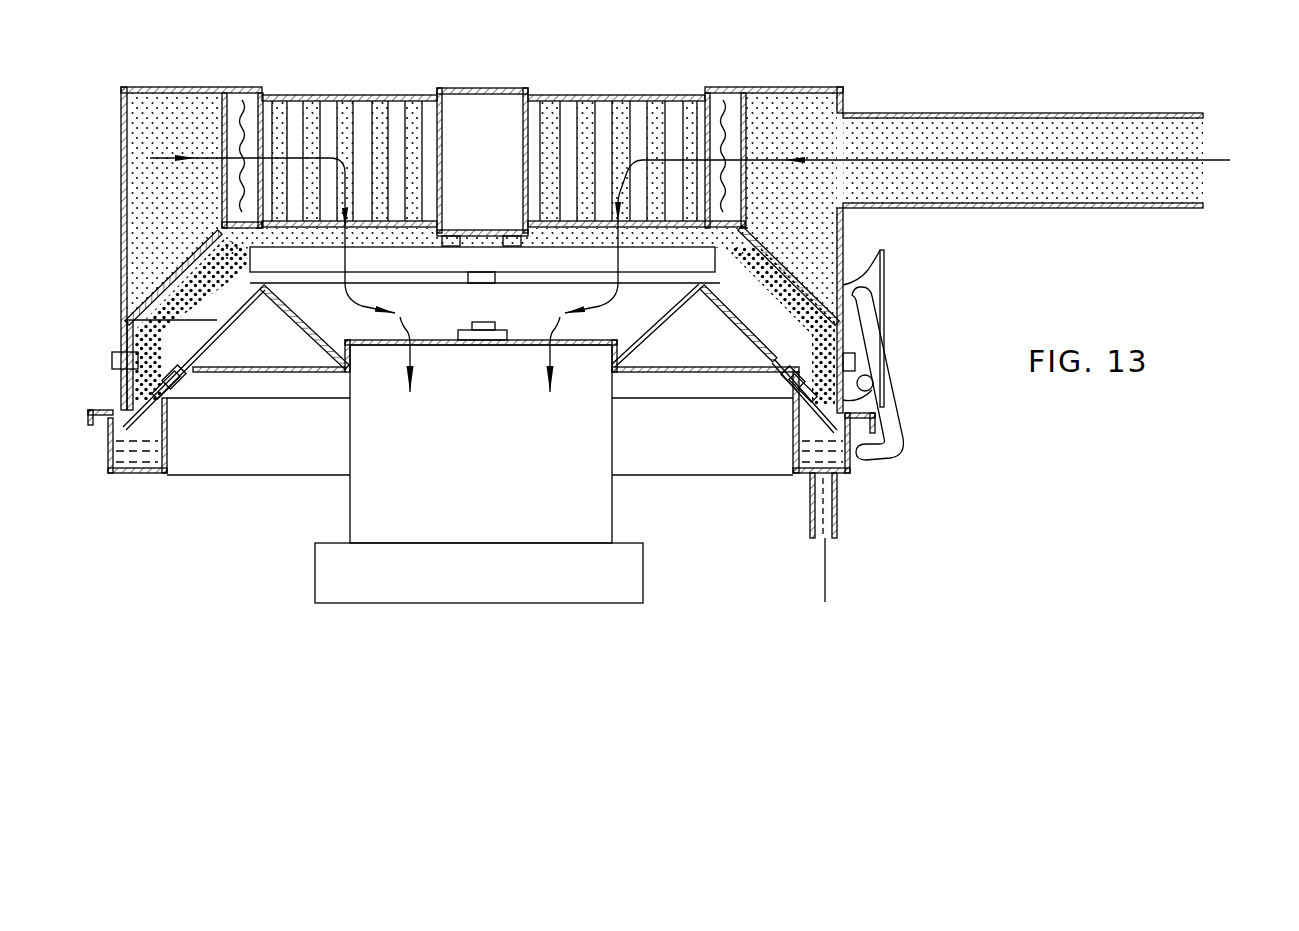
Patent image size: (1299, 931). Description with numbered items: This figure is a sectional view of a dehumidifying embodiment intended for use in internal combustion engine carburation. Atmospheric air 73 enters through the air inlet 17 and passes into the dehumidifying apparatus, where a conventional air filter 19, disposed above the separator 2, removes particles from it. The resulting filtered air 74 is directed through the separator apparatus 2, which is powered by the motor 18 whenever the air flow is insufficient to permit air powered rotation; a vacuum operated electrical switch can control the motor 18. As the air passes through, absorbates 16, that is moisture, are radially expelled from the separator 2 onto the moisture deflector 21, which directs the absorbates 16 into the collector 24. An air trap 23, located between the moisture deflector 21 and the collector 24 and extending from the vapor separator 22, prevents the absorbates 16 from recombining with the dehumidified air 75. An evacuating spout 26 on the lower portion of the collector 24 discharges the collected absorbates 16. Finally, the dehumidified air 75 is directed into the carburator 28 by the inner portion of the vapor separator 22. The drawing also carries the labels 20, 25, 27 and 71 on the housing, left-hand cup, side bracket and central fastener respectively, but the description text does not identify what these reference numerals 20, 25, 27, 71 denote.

The separator 2 is at (283, 284).
The absorbates 16 is at (206, 259).
The air inlet 17 is at (1208, 162).
The motor 18 is at (466, 120).
The air filter 19 is at (300, 128).
The housing 20 is at (188, 76).
The moisture deflector 21 is at (796, 274).
The vapor separator 22 is at (741, 347).
The air trap 23 is at (824, 423).
The collector 24 is at (851, 480).
The collection cup 25 is at (100, 428).
The evacuating spout 26 is at (838, 528).
The clamp bracket 27 is at (895, 362).
The carburator 28 is at (612, 500).
The fastening bolt 71 is at (509, 312).
The atmospheric air 73 is at (778, 118).
The filtered air 74 is at (630, 143).
The dehumidified air 75 is at (408, 323).